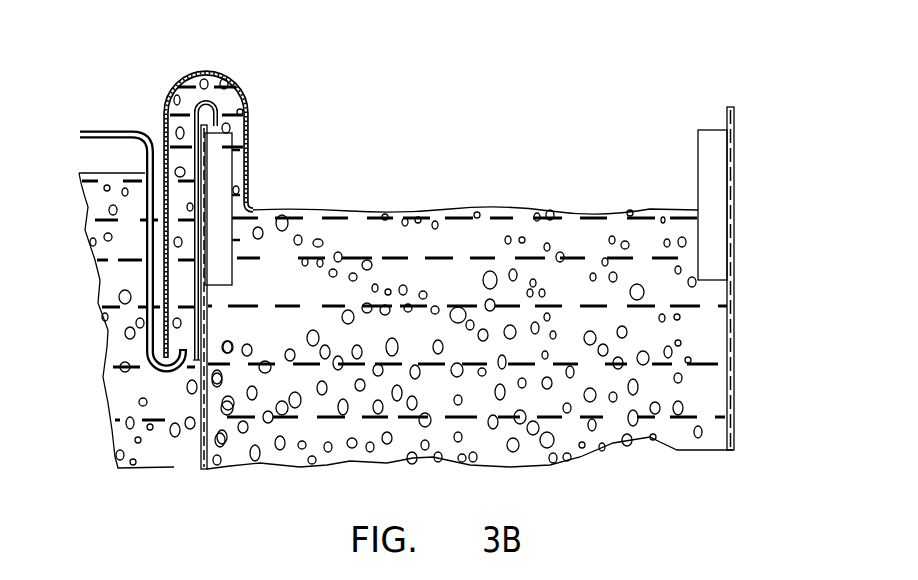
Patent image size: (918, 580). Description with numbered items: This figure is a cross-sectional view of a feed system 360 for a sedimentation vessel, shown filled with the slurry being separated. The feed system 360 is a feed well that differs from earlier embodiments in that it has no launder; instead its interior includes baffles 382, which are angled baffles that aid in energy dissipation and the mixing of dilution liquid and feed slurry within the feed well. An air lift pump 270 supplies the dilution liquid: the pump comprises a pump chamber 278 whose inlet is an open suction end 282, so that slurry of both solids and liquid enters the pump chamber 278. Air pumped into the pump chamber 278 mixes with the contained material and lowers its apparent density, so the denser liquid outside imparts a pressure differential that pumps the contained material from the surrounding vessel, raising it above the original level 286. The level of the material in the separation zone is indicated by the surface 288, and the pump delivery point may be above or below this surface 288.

The air lift pump 270 is at (121, 118).
The pump chamber 278 is at (201, 70).
The original level 286 is at (110, 168).
The level of material in the separation zone 288 is at (272, 208).
The baffle 382 is at (218, 162).
The feed system 360 is at (734, 178).
The open suction end 282 is at (190, 358).